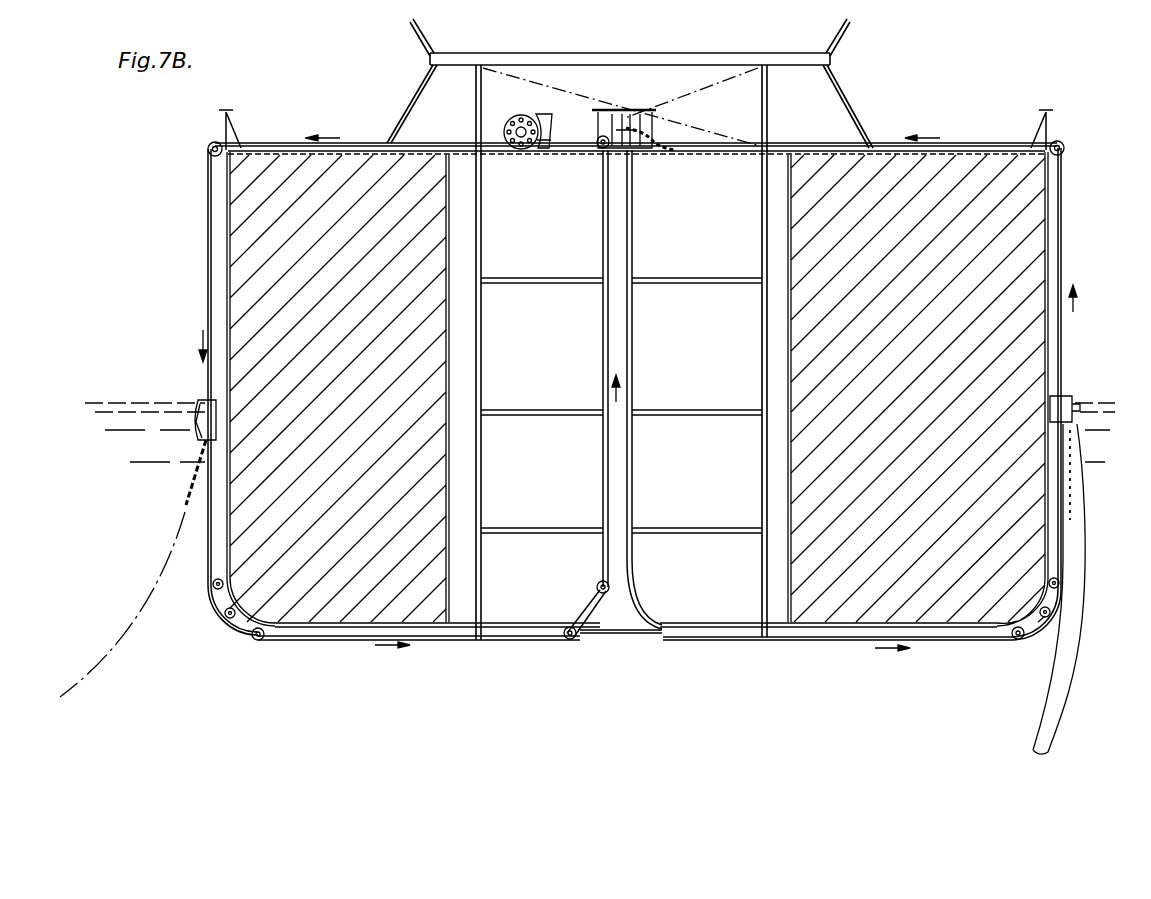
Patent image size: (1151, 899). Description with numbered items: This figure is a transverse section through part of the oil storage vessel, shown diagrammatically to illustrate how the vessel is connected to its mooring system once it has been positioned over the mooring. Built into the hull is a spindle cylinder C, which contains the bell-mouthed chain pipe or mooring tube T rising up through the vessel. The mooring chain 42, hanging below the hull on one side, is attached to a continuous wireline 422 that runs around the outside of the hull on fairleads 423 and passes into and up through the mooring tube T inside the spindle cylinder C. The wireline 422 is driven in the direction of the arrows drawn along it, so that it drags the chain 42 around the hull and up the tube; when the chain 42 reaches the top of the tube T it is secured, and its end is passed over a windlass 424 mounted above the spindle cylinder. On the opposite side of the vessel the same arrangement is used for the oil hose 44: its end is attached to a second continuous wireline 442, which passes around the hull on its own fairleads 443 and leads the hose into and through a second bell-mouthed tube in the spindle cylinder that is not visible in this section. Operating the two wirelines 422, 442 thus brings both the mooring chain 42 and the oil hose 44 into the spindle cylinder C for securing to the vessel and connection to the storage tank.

The mooring chain 42 is at (190, 490).
The oil hose 44 is at (1075, 662).
The continuous wireline 422 is at (208, 238).
The fairleads 423 is at (210, 148).
The windlass 424 is at (606, 122).
The continuous wireline 442 is at (1068, 280).
The fairleads 443 is at (1065, 148).
The spindle cylinder C is at (478, 605).
The mooring tube T is at (614, 620).